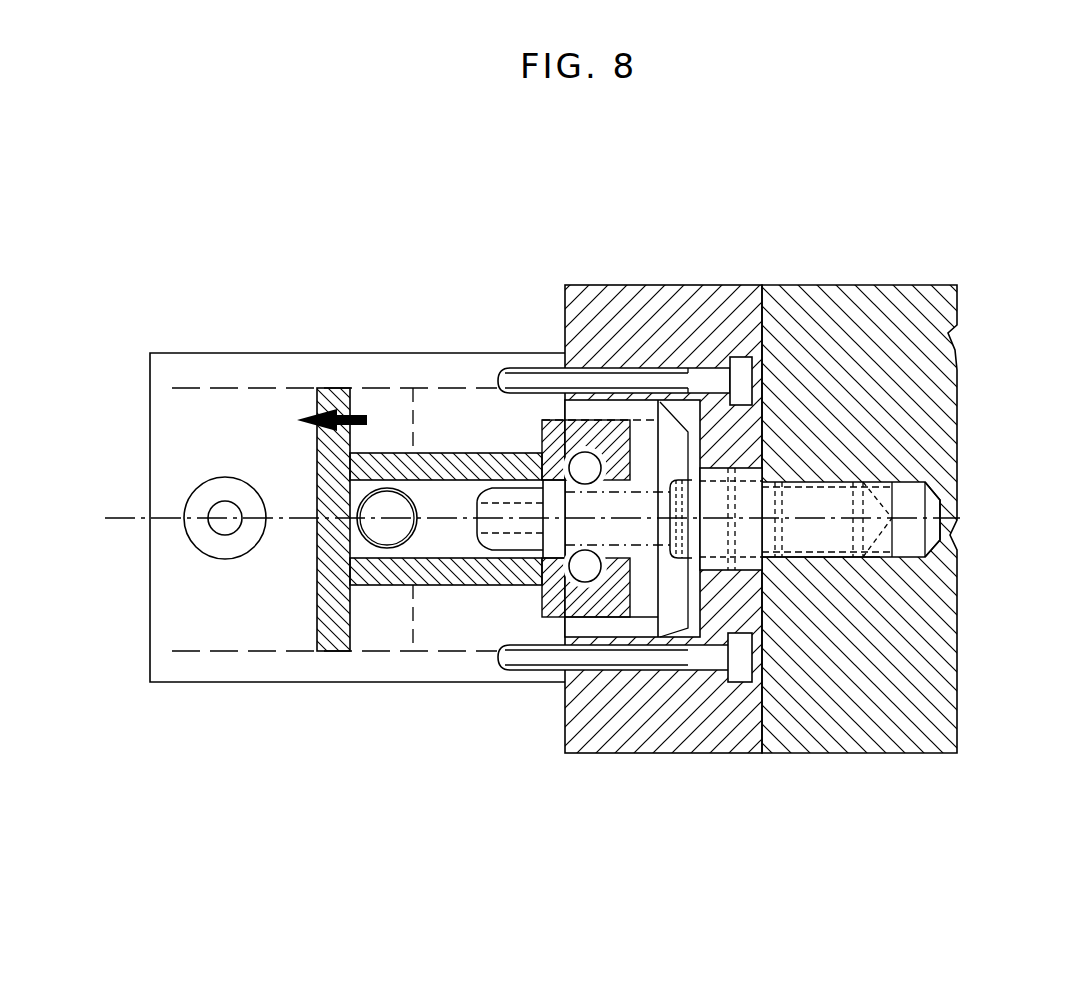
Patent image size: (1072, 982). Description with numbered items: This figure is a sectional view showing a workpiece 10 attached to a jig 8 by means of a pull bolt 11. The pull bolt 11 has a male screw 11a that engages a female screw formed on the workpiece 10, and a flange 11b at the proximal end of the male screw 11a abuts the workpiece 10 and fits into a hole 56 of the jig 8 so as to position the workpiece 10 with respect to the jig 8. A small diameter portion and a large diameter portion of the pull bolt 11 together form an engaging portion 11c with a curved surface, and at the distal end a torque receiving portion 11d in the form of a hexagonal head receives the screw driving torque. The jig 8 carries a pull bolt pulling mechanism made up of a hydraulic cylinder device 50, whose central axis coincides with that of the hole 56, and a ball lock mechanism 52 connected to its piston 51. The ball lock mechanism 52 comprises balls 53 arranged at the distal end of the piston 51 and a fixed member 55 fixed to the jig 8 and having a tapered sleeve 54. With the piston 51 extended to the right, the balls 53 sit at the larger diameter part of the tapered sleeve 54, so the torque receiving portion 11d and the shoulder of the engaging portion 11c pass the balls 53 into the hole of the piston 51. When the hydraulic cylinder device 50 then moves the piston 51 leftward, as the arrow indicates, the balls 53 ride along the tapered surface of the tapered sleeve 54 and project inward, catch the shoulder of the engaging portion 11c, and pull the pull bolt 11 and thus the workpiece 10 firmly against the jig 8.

The jig 8 is at (660, 290).
The workpiece 10 is at (882, 290).
The pull bolt 11 is at (887, 576).
The male screw 11a is at (840, 490).
The flange 11b is at (790, 562).
The engaging portion 11c is at (566, 487).
The torque receiving portion 11d is at (482, 582).
The hydraulic cylinder device 50 is at (279, 366).
The piston 51 is at (397, 452).
The ball lock mechanism 52 is at (520, 608).
The balls 53 is at (583, 585).
The tapered sleeve 54 is at (612, 602).
The fixed member 55 is at (612, 623).
The hole 56 is at (720, 565).